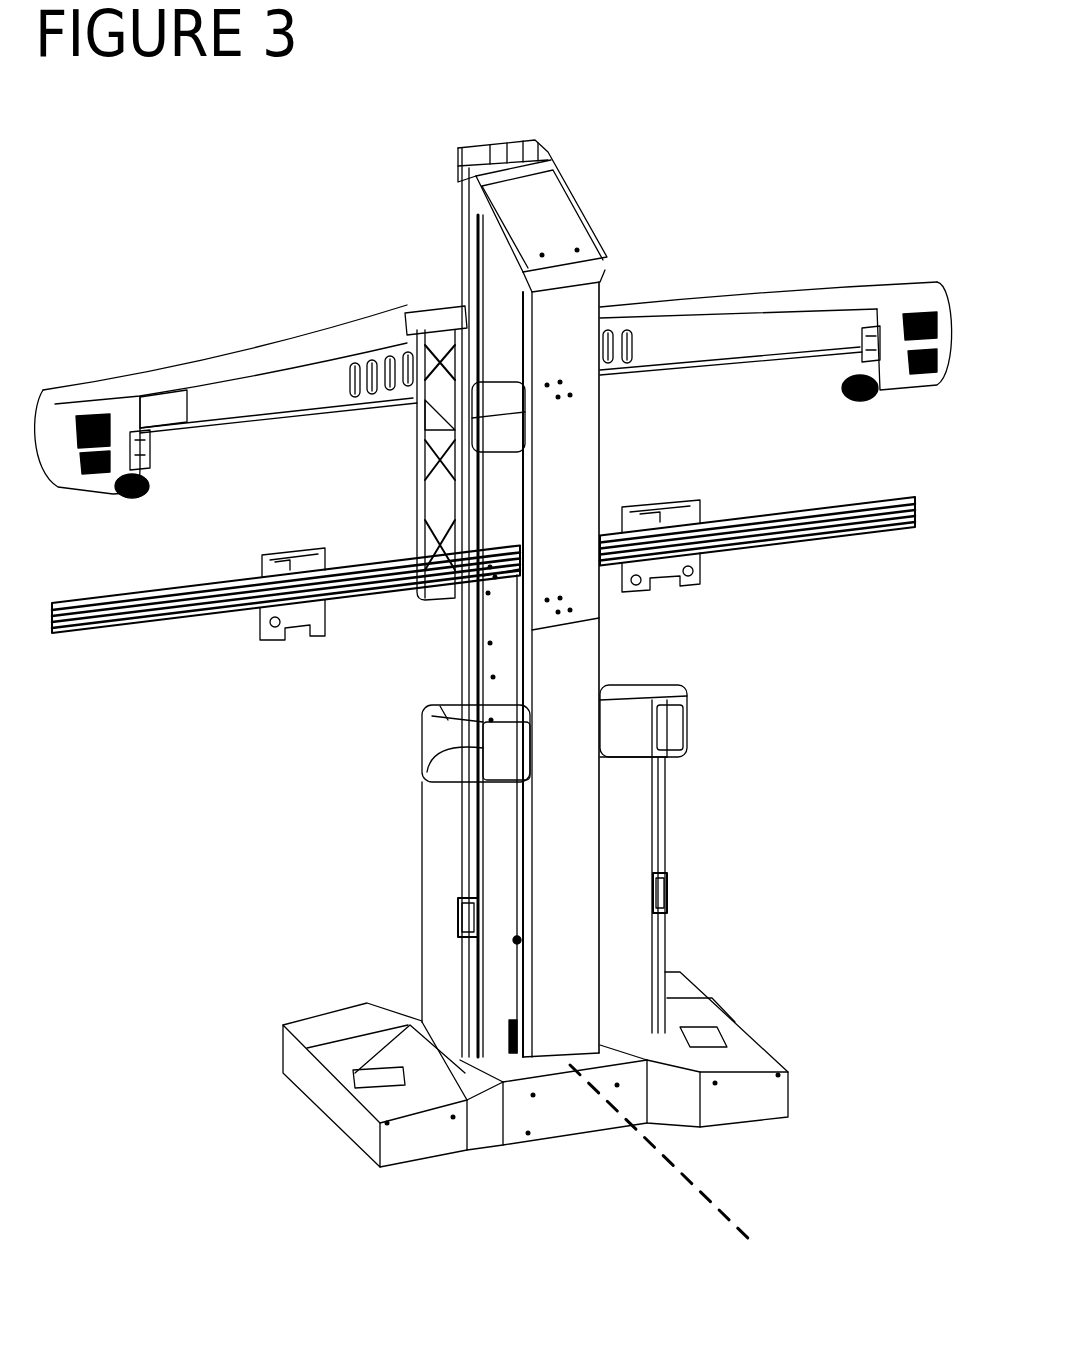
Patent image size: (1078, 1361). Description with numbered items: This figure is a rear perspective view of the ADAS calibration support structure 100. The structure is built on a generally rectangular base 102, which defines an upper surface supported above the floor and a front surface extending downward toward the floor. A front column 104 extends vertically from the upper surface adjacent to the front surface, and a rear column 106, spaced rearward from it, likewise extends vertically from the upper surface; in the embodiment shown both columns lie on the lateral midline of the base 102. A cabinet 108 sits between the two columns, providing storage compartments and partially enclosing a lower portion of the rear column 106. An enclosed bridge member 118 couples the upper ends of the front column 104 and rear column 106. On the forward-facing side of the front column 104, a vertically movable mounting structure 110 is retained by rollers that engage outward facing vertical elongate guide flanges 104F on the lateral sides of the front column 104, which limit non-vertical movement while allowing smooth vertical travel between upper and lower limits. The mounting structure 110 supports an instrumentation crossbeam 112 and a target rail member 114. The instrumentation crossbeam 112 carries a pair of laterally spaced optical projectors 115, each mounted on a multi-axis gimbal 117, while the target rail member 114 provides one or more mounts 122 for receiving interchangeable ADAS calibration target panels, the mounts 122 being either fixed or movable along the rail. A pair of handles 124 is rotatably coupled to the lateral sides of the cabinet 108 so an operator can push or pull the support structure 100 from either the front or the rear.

The ADAS calibration support structure 100 is at (493, 649).
The base 102 is at (607, 1084).
The front column 104 is at (393, 602).
The vertical elongate guide flange 104F is at (419, 809).
The rear column 106 is at (633, 646).
The cabinet 108 is at (543, 869).
The mounting structure 110 is at (633, 433).
The instrumentation crossbeam 112 is at (493, 395).
The target rail member 114 is at (483, 611).
The optical projector 115 is at (496, 453).
The multi-axis gimbal 117 is at (505, 408).
The bridge member 118 is at (562, 206).
The mount 122 is at (498, 613).
The handle 124 is at (571, 750).